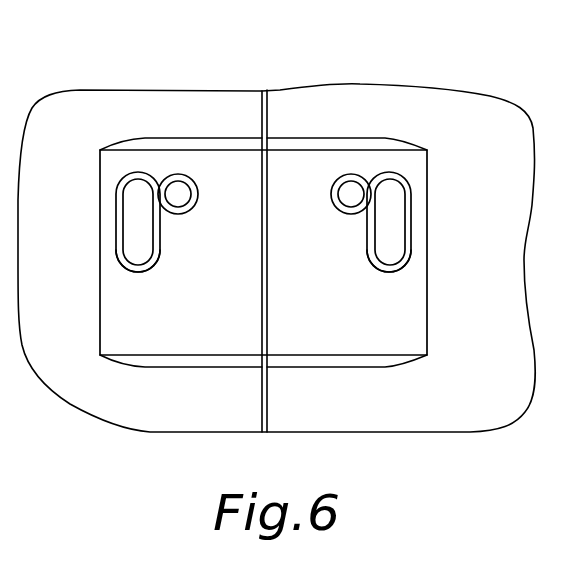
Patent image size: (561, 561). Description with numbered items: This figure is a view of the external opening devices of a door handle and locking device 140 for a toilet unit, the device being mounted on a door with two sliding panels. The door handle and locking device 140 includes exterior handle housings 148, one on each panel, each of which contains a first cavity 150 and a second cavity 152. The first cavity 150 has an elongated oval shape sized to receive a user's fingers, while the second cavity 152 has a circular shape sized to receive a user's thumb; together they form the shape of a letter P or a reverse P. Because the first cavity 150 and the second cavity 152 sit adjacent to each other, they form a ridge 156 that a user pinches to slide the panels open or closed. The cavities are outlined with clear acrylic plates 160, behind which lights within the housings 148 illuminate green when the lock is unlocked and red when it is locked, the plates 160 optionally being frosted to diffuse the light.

The door handle and locking device 140 is at (441, 73).
The exterior handle housing 148 is at (188, 163).
The second cavity 152 is at (174, 193).
The ridge 156 is at (153, 201).
The first cavity 150 is at (137, 232).
The clear acrylic plate 160 is at (128, 265).